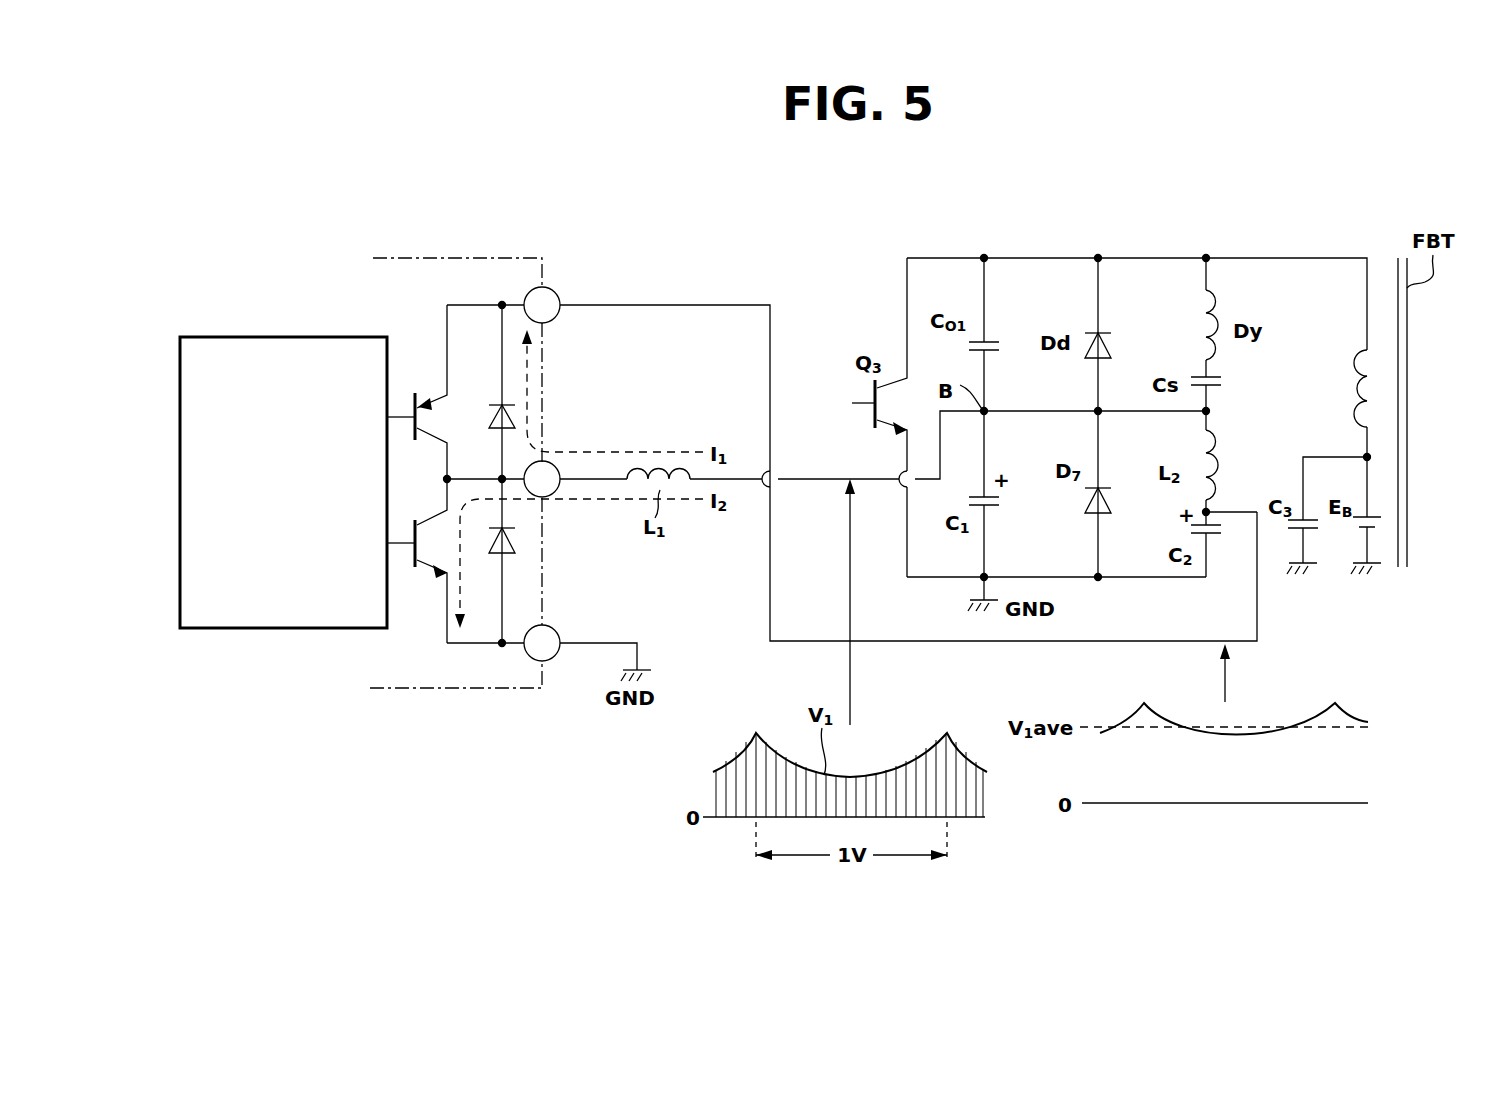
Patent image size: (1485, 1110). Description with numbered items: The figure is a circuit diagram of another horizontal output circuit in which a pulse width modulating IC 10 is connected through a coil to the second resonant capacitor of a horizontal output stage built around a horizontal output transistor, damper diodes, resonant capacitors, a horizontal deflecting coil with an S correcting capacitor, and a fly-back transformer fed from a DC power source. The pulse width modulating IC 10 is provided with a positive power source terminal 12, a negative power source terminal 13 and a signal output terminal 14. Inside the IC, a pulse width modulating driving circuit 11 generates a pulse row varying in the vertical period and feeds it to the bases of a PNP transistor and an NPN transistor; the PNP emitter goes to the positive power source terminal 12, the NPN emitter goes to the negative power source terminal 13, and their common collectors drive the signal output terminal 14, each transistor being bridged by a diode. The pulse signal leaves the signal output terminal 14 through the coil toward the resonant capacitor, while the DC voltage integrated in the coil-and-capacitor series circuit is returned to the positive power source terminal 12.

The pulse width modulating IC 10 is at (476, 222).
The pulse width modulating driving circuit 11 is at (303, 337).
The positive power source terminal 12 is at (556, 292).
The negative power source terminal 13 is at (556, 631).
The signal output terminal 14 is at (556, 467).